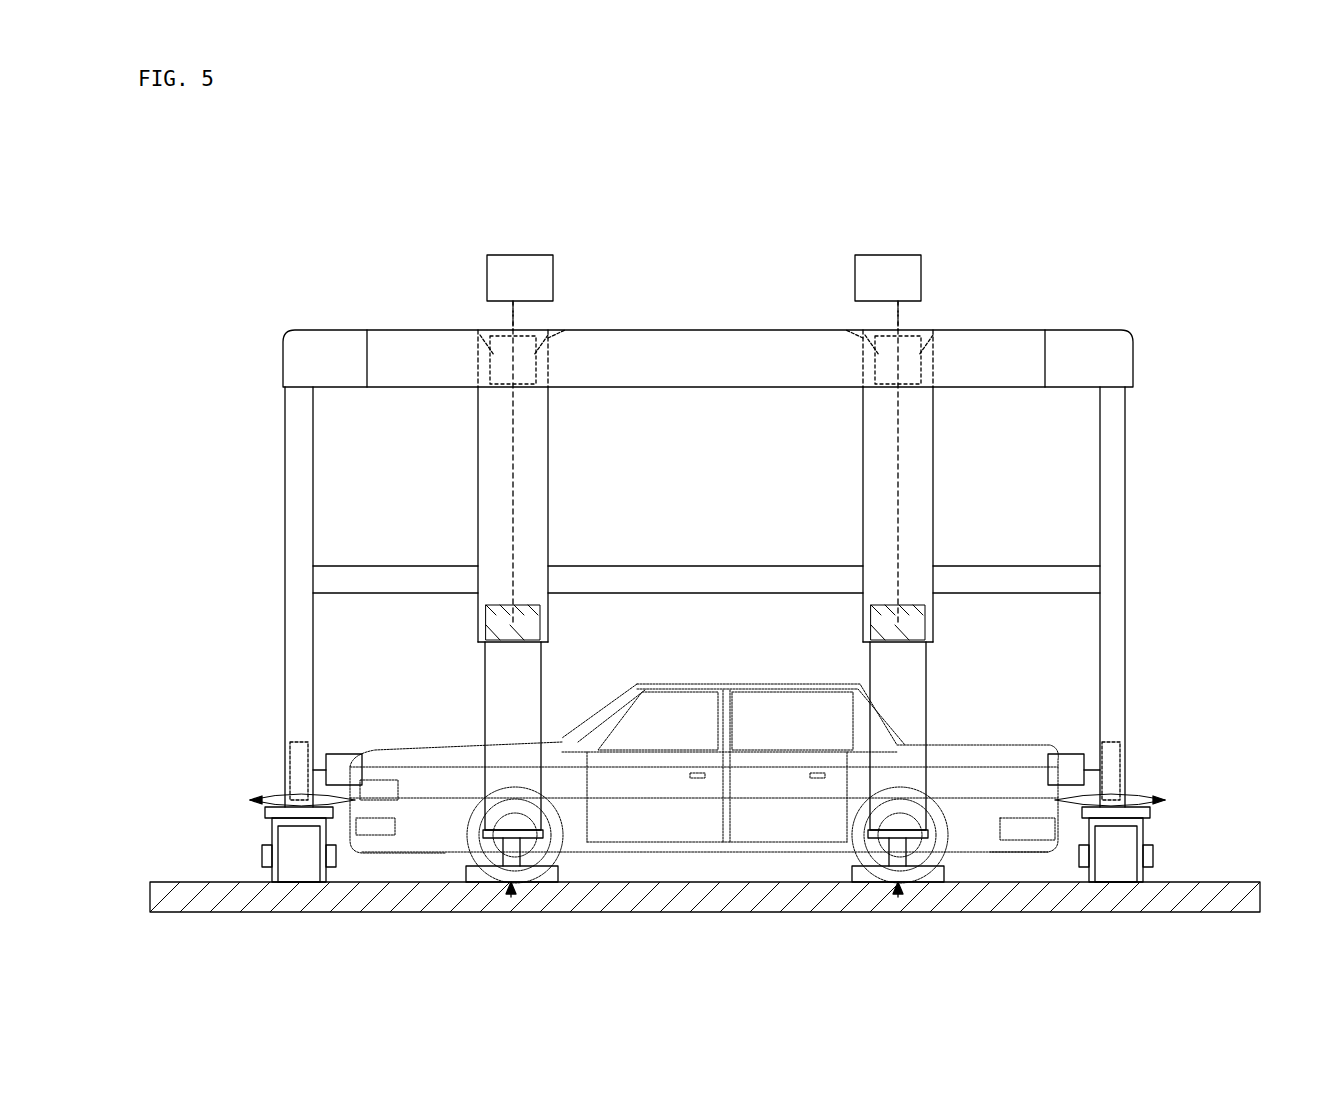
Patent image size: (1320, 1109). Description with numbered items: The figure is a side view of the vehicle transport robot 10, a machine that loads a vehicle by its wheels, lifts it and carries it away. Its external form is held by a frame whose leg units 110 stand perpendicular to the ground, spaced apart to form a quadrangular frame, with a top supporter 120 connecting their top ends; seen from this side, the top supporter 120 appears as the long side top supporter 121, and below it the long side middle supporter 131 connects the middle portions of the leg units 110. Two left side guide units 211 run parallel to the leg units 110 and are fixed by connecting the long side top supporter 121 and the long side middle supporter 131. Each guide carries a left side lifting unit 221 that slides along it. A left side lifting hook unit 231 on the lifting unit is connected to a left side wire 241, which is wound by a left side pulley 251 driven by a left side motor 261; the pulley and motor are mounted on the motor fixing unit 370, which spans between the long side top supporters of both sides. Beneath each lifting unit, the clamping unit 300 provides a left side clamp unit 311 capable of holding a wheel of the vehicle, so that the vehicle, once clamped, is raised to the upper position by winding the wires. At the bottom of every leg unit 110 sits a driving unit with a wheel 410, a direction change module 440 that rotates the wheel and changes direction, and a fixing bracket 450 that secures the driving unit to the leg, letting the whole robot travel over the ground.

The vehicle transport robot 10 is at (258, 184).
The leg unit 110 is at (285, 503).
The top supporter 120 is at (705, 330).
The long side top supporter 121 is at (708, 358).
The long side middle supporter 131 is at (706, 566).
The left side guide unit 211 is at (478, 475).
The left side lifting unit 221 is at (485, 686).
The left side lifting hook unit 231 is at (486, 628).
The left side wire 241 is at (513, 518).
The left side pulley 251 is at (490, 355).
The left side motor 261 is at (514, 255).
The clamping unit 300 is at (511, 898).
The left side clamp unit 311 is at (512, 874).
The motor fixing unit 370 is at (552, 332).
The wheel 410 is at (290, 855).
The direction change module 440 is at (290, 757).
The fixing bracket 450 is at (275, 820).